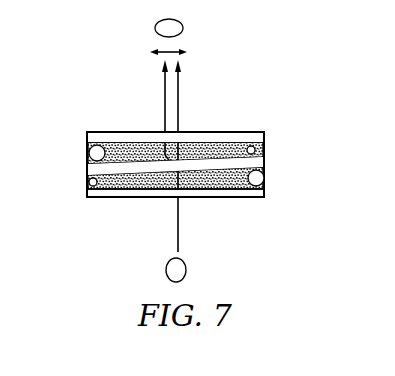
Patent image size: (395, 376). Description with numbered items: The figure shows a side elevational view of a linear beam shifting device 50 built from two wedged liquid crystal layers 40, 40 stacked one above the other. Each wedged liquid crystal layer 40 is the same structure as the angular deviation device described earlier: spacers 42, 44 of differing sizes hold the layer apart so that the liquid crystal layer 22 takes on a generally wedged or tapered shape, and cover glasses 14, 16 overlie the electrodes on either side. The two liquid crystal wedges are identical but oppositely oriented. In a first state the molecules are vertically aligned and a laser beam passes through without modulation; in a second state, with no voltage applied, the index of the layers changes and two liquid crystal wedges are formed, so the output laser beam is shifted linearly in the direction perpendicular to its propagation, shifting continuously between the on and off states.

The linear beam shifting device 50 is at (286, 87).
The cover glass 14 is at (230, 162).
The cover glass 16 is at (201, 133).
The liquid crystal layer 22 is at (140, 145).
The wedged liquid crystal layer 40 is at (229, 126).
The spacer 42 is at (256, 152).
The spacer 44 is at (95, 156).